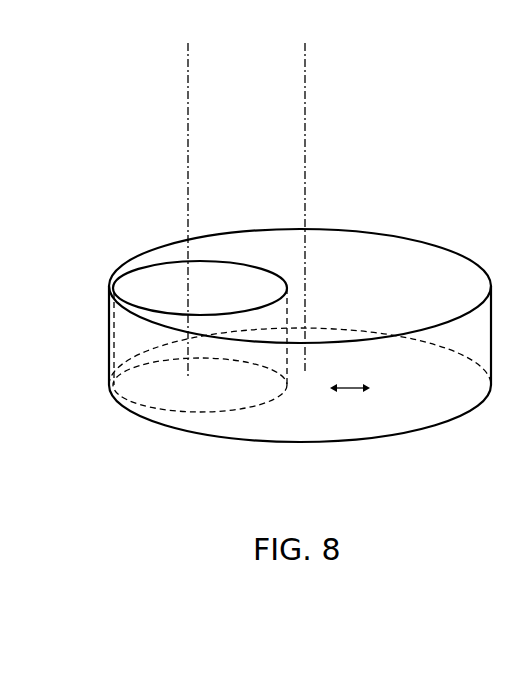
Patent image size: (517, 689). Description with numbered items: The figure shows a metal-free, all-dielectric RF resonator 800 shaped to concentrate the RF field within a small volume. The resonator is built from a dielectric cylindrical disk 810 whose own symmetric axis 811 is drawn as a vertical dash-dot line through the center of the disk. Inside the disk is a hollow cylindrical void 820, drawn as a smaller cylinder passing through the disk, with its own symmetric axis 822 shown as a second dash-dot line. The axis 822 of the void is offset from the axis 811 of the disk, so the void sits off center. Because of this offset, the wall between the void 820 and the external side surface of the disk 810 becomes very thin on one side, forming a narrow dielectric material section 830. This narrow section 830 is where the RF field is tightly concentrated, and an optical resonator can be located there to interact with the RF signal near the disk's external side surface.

The dielectric RF resonator 800 is at (264, 271).
The dielectric cylindrical disk 810 is at (423, 266).
The symmetric axis of the dielectric cylindrical disk 811 is at (305, 99).
The hollow cylindrical void 820 is at (155, 282).
The symmetric axis of the hollow cylindrical void 822 is at (188, 98).
The narrow dielectric material section 830 is at (125, 300).